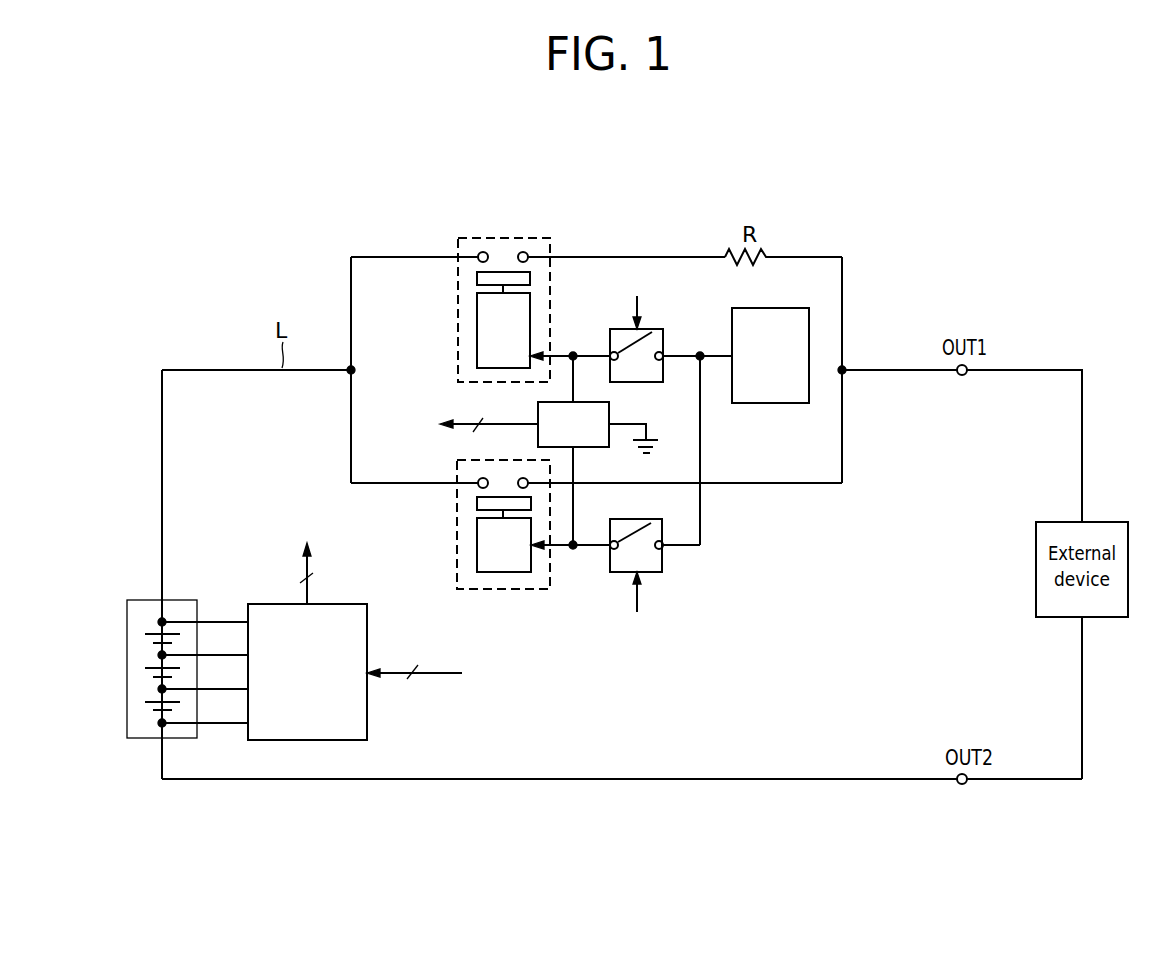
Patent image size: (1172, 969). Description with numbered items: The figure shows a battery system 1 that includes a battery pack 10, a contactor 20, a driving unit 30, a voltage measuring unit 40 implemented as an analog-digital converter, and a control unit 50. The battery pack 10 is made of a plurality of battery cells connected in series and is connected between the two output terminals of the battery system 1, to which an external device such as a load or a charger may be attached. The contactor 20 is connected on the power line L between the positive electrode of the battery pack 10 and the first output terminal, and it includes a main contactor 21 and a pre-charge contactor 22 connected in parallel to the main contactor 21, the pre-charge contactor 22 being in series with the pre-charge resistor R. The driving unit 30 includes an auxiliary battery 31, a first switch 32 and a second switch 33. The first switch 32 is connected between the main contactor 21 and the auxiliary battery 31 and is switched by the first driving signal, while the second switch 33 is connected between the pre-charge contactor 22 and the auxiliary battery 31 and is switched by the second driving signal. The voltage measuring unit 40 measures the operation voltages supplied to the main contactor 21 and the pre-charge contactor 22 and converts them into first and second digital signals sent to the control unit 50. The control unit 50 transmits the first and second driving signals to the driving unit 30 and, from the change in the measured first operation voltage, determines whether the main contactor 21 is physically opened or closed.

The battery system 1 is at (968, 229).
The battery pack 10 is at (143, 600).
The contactor 20 is at (189, 203).
The main contactor 21 is at (503, 589).
The pre-charge contactor 22 is at (506, 238).
The driving unit 30 is at (189, 267).
The auxiliary battery 31 is at (772, 403).
The first switch 32 is at (662, 563).
The second switch 33 is at (664, 334).
The voltage measuring unit (ADC) 40 is at (609, 405).
The control unit 50 is at (367, 732).